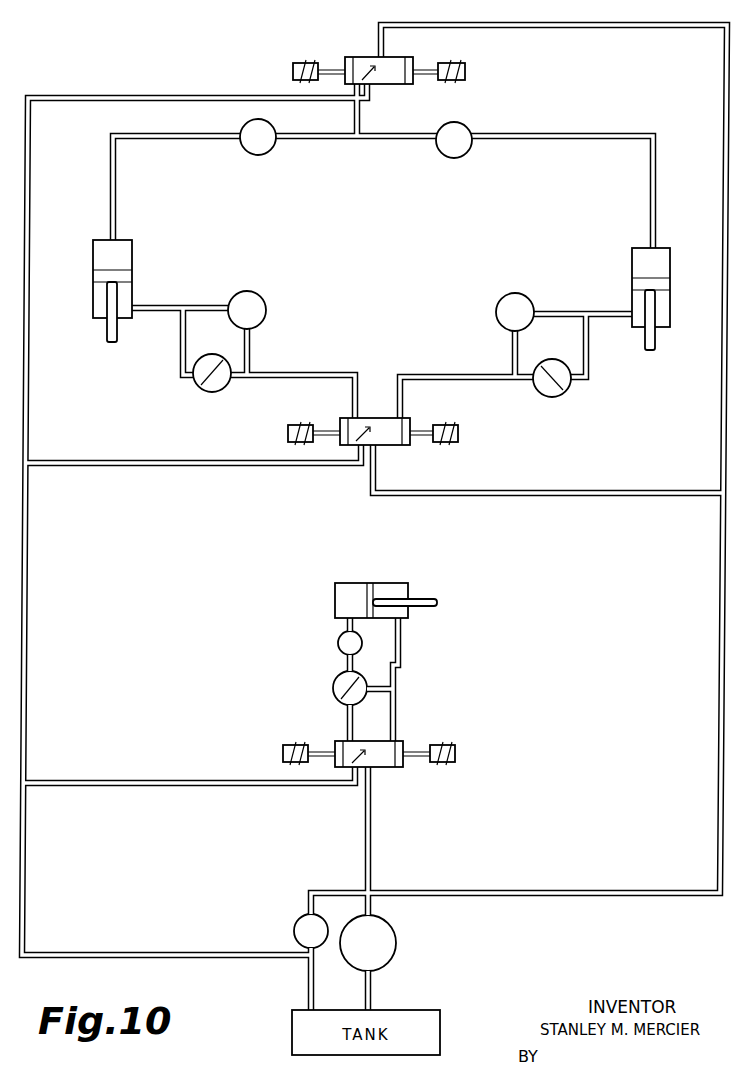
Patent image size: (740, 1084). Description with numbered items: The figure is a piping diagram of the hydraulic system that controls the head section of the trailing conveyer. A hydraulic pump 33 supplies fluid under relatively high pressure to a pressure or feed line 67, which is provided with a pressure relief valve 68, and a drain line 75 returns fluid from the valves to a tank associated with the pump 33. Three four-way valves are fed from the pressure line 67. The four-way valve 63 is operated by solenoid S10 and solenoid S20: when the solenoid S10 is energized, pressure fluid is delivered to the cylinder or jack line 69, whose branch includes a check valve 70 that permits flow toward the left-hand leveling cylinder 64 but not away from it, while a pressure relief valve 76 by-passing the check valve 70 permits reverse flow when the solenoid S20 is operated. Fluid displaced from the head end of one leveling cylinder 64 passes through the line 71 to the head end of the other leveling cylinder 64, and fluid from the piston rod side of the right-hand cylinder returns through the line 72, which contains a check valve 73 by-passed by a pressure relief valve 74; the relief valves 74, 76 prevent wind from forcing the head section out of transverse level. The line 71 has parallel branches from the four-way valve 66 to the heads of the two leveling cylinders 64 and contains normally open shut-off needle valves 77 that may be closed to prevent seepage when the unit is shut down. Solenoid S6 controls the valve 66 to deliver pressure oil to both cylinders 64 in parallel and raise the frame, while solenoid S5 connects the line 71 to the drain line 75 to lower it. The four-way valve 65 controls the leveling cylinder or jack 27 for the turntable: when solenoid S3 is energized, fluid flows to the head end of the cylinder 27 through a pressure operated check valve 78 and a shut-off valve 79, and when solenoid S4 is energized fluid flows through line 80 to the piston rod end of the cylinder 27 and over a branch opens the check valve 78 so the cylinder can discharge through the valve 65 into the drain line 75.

The drain line 75 is at (53, 92).
The pressure line 67 is at (662, 29).
The four-way valve 66 is at (384, 80).
The solenoid S6 is at (318, 61).
The solenoid S5 is at (439, 61).
The line 71 is at (331, 146).
The shut-off needle valves 77 is at (250, 156).
The leveling cylinder 64 is at (125, 262).
The pressure relief valve 76 is at (259, 297).
The by-pass pressure relief valve 74 is at (503, 297).
The cylinder line 69 is at (303, 371).
The line 72 is at (455, 372).
The four-way valve 63 is at (361, 413).
The check valve 70 is at (197, 383).
The check valve 73 is at (566, 389).
The solenoid S10 is at (313, 424).
The solenoid S20 is at (436, 424).
The leveling cylinder 27 is at (389, 591).
The shut-off valve 79 is at (338, 643).
The pressure operated check valve 78 is at (333, 685).
The line 80 is at (393, 685).
The four-way valve 65 is at (378, 759).
The solenoid S3 is at (309, 744).
The solenoid S4 is at (429, 744).
The pressure relief valve 68 is at (302, 917).
The hydraulic pump 33 is at (396, 941).